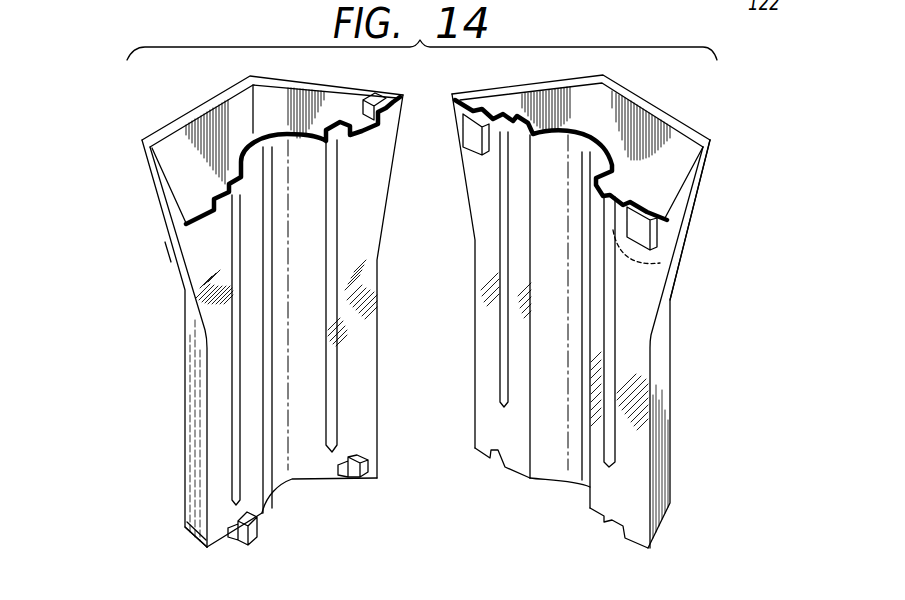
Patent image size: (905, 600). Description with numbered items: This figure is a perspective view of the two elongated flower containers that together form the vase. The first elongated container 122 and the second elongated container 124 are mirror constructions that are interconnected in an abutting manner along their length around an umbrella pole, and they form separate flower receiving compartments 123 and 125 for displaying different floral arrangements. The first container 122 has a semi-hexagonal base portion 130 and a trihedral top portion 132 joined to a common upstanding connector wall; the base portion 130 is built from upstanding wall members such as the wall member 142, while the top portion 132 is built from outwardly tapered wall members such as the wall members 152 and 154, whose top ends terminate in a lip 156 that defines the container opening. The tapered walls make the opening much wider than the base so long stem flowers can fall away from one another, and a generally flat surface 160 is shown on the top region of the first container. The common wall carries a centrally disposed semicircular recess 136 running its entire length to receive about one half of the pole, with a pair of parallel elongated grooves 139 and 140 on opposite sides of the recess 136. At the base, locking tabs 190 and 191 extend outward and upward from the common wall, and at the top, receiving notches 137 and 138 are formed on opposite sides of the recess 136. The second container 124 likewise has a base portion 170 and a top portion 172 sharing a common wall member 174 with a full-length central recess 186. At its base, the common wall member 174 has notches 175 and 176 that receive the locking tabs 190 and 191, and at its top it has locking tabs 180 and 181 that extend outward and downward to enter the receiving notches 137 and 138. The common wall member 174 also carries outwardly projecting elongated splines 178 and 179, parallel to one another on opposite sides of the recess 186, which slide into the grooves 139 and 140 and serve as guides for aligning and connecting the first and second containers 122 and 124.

The first elongated container 122 is at (173, 347).
The flower receiving compartment 123 is at (182, 142).
The second elongated container 124 is at (688, 283).
The flower receiving compartment 125 is at (620, 130).
The semi-hexagonal base portion 130 is at (163, 453).
The trihedral top portion 132 is at (167, 283).
The recess 136 is at (290, 494).
The receiving notch 137 is at (403, 97).
The receiving notch 138 is at (200, 215).
The elongated groove 139 is at (243, 412).
The elongated groove 140 is at (337, 370).
The upstanding wall member 142 is at (192, 467).
The outwardly tapered wall member 152 is at (165, 242).
The outwardly tapered wall member 154 is at (330, 90).
The lip 156 is at (220, 97).
The flat surface 160 is at (268, 124).
The base portion 170 is at (670, 400).
The top portion 172 is at (702, 193).
The common wall member 174 is at (625, 478).
The notch 175 is at (612, 525).
The notch 176 is at (500, 457).
The elongated spline 178 is at (603, 325).
The elongated spline 179 is at (502, 378).
The locking tab 180 is at (473, 130).
The locking tab 181 is at (665, 255).
The recess 186 is at (567, 493).
The locking tab 190 is at (233, 548).
The locking tab 191 is at (353, 478).